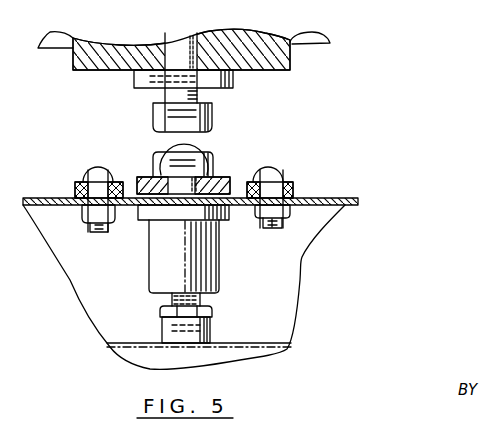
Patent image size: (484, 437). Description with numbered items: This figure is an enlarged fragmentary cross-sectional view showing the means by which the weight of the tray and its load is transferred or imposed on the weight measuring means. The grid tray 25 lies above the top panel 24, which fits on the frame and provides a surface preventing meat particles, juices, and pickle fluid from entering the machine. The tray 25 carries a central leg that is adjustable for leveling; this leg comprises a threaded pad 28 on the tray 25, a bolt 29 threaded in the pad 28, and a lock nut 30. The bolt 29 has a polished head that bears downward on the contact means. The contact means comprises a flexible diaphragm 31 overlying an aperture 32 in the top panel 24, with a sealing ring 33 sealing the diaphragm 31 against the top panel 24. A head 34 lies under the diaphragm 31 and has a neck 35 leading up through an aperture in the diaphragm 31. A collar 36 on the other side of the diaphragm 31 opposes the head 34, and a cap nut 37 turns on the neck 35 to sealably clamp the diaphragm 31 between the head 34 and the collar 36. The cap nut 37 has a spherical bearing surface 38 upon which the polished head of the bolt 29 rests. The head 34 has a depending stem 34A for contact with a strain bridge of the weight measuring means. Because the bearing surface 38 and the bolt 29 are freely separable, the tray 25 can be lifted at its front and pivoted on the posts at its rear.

The top panel 24 is at (345, 198).
The grid tray 25 is at (189, 59).
The threaded pad 28 is at (118, 54).
The bolt 29 is at (213, 117).
The lock nut 30 is at (234, 83).
The flexible diaphragm 31 is at (295, 196).
The aperture 32 is at (130, 205).
The sealing ring 33 is at (292, 183).
The head 34 is at (214, 270).
The depending stem 34A is at (210, 341).
The neck 35 is at (183, 190).
The collar 36 is at (147, 177).
The cap nut 37 is at (214, 160).
The spherical bearing surface 38 is at (162, 140).